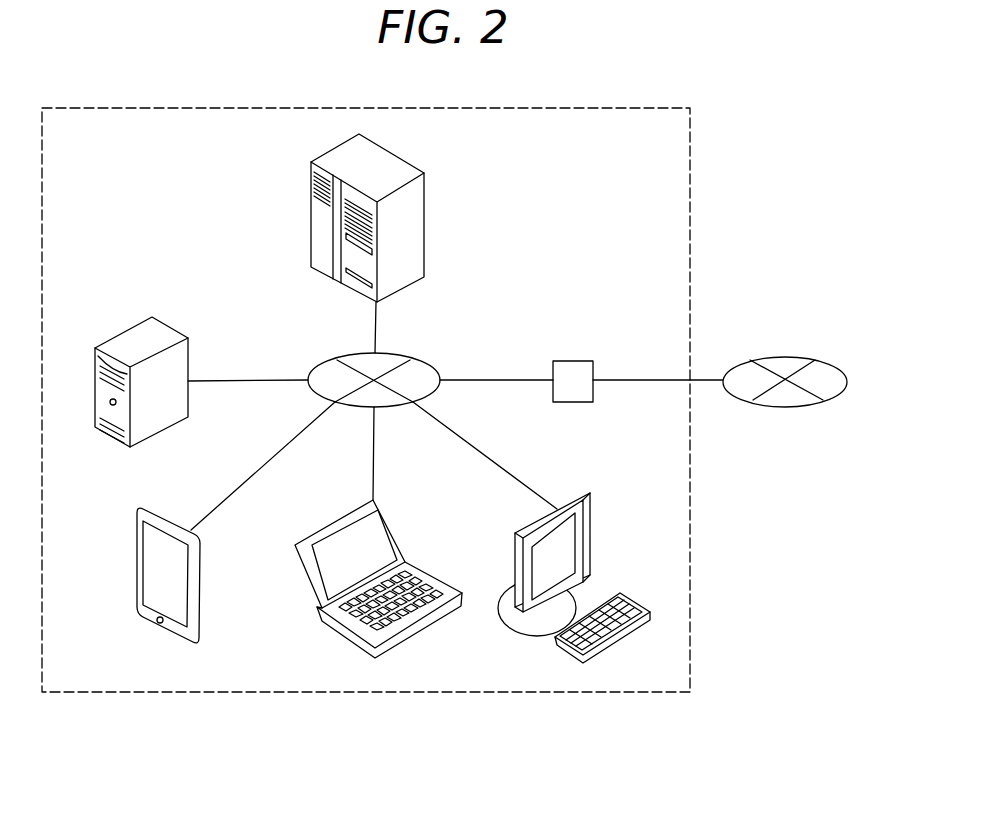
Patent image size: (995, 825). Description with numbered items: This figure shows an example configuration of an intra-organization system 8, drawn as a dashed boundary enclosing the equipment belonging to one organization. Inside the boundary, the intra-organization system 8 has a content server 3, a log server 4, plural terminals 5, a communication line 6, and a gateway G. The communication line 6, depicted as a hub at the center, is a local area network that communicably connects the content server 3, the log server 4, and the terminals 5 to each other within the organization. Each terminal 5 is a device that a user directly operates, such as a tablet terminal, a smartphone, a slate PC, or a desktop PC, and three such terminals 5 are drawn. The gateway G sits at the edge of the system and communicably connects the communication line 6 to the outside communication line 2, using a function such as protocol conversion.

The communication line 2 is at (782, 357).
The content server 3 is at (127, 332).
The log server 4 is at (320, 230).
The terminal 5 is at (153, 543).
The communication line 6 is at (317, 372).
The intra-organization system 8 is at (692, 527).
The gateway G is at (568, 360).